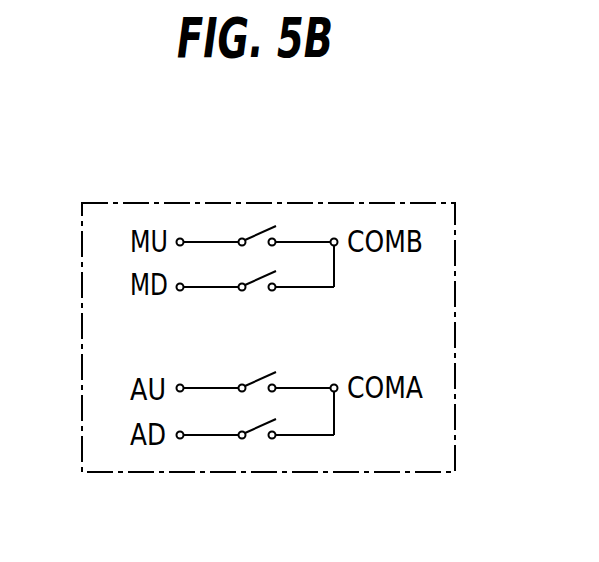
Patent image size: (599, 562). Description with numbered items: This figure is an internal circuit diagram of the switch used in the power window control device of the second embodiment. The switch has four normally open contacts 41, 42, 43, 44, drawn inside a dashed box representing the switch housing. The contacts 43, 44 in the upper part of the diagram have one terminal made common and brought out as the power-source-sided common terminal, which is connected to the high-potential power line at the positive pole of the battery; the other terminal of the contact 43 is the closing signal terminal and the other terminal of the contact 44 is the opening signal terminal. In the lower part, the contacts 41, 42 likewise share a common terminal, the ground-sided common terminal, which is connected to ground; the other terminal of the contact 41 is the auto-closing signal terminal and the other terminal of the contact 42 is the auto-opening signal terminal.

The contact 41 is at (263, 378).
The contact 42 is at (259, 420).
The contact 43 is at (260, 230).
The contact 44 is at (247, 283).